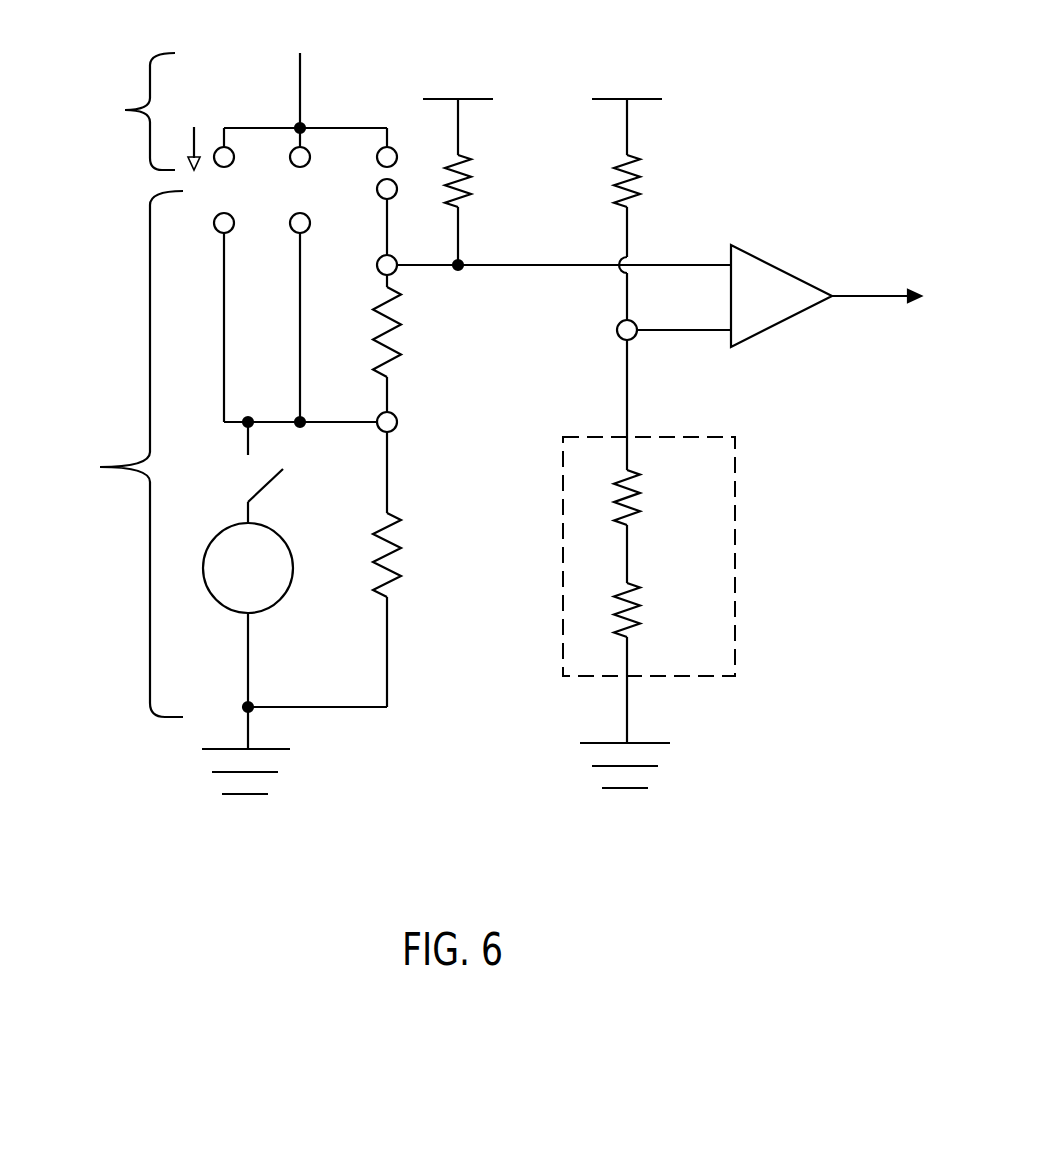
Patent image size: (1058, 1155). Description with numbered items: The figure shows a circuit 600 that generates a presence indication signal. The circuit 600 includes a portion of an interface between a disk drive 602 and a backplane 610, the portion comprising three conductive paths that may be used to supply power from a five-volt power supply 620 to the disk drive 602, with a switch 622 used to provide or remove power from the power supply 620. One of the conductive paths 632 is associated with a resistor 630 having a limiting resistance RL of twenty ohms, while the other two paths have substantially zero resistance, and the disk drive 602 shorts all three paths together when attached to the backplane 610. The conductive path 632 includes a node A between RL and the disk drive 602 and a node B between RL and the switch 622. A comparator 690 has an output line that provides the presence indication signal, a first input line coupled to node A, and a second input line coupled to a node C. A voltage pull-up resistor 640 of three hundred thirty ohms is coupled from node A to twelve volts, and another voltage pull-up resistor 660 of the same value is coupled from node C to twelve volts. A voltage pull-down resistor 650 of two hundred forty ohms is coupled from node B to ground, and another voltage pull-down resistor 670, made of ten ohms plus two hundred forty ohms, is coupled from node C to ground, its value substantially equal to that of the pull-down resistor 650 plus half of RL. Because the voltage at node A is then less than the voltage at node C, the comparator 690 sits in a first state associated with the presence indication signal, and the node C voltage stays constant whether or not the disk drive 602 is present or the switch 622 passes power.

The circuit 600 is at (810, 151).
The disk drive 602 is at (90, 120).
The backplane 610 is at (92, 474).
The 5V power supply 620 is at (286, 541).
The switch 622 is at (262, 492).
The resistor 630 is at (382, 316).
The conductive path 632 is at (378, 195).
The voltage pull-up resistor 640 is at (462, 158).
The voltage pull-down resistor 650 is at (391, 584).
The voltage pull-up resistor 660 is at (632, 158).
The voltage pull-down resistor 670 is at (737, 490).
The comparator 690 is at (765, 263).